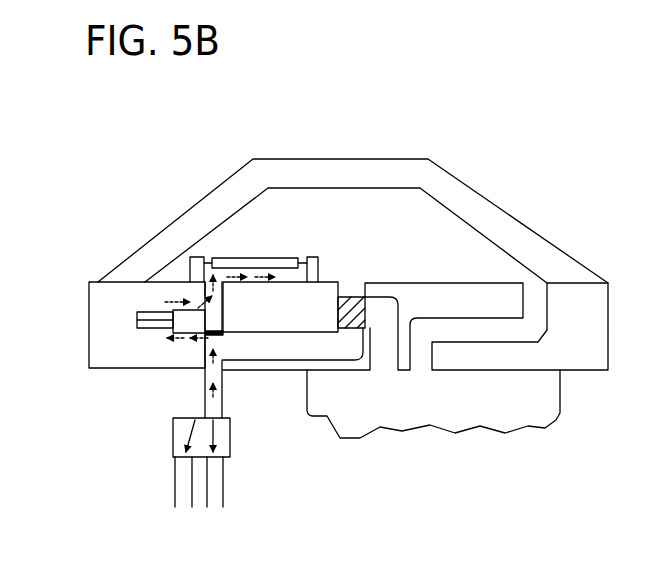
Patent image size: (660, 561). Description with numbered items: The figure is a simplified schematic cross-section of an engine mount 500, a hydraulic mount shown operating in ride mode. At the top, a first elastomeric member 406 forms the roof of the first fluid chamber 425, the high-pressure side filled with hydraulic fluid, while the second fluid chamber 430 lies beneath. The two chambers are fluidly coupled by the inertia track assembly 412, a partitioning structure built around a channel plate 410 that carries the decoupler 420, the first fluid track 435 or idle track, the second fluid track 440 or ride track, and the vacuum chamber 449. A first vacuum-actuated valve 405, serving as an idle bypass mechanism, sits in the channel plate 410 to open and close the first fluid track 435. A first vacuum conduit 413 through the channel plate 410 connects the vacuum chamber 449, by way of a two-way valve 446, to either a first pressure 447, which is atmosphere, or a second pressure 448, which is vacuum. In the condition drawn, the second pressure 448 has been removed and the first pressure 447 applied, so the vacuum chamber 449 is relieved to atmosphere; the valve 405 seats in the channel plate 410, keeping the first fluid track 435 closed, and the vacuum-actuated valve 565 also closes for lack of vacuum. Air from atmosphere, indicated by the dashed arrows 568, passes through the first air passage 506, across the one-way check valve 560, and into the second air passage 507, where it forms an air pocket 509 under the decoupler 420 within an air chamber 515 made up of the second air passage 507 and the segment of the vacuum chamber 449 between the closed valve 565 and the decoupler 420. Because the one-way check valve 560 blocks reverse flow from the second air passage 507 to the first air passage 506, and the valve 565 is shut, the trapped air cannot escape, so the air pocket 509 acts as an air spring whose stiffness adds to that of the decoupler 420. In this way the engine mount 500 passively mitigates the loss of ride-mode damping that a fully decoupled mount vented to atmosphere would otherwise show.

The engine mount 500 is at (528, 128).
The first elastomeric member 406 is at (389, 159).
The first fluid chamber 425 is at (367, 228).
The first vacuum-actuated valve 405 is at (350, 292).
The decoupler 420 is at (258, 260).
The air pocket 509 is at (250, 272).
The channel plate 410 is at (120, 303).
The second air passage 507 is at (167, 300).
The air chamber 515 is at (224, 309).
The one-way check valve 560 is at (137, 320).
The first air passage 506 is at (160, 340).
The vacuum chamber 449 is at (210, 350).
The vacuum-actuated valve 565 is at (215, 334).
The dashed arrows 568 is at (208, 394).
The first vacuum conduit 413 is at (224, 373).
The first fluid track 435 is at (382, 345).
The second fluid track 440 is at (422, 360).
The second fluid chamber 430 is at (524, 401).
The inertia track assembly 412 is at (585, 385).
The two-way valve 446 is at (232, 433).
The second pressure 448 is at (180, 507).
The first pressure 447 is at (220, 507).